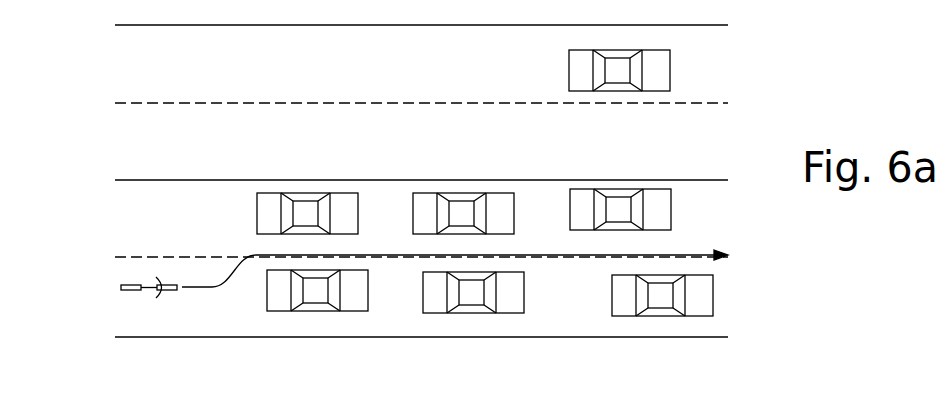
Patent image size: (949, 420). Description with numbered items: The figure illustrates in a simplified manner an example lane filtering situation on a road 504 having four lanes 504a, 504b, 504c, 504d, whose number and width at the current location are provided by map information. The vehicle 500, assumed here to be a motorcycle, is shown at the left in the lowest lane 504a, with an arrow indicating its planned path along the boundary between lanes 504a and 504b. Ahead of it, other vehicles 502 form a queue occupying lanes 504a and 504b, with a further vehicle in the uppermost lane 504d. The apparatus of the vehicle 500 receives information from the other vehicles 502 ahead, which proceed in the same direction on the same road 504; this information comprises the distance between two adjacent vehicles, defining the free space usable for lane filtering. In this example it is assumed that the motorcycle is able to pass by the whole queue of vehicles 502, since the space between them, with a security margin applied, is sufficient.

The vehicle 500 is at (130, 290).
The other vehicles 502 is at (290, 193).
The road 504 is at (421, 200).
The lane 504a is at (202, 323).
The lane 504b is at (202, 240).
The lane 504c is at (201, 158).
The lane 504d is at (202, 73).